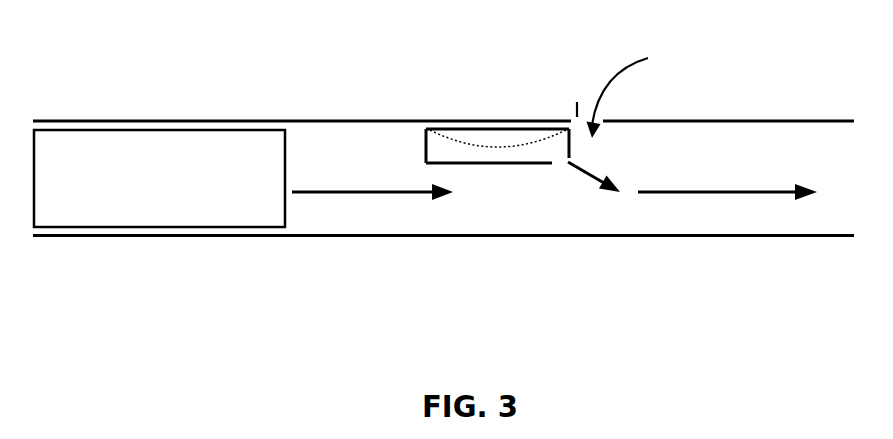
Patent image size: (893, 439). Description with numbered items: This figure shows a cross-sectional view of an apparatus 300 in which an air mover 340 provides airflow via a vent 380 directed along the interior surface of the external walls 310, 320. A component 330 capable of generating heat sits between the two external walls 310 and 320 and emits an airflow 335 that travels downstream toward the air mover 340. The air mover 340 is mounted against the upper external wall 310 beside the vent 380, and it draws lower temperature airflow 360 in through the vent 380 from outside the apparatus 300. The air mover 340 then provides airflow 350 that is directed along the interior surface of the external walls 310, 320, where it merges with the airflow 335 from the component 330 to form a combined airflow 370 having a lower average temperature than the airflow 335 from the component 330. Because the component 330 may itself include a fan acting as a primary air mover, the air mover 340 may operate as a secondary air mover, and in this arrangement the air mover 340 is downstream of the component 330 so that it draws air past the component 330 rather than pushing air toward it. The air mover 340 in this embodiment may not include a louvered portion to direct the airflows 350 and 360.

The apparatus 300 is at (85, 43).
The external wall 310 is at (445, 121).
The external wall 320 is at (175, 237).
The component 330 is at (159, 178).
The airflow 335 is at (387, 191).
The air mover 340 is at (480, 165).
The airflow 350 is at (597, 178).
The lower temperature airflow 360 is at (632, 92).
The combined airflow 370 is at (750, 191).
The vent 380 is at (594, 122).